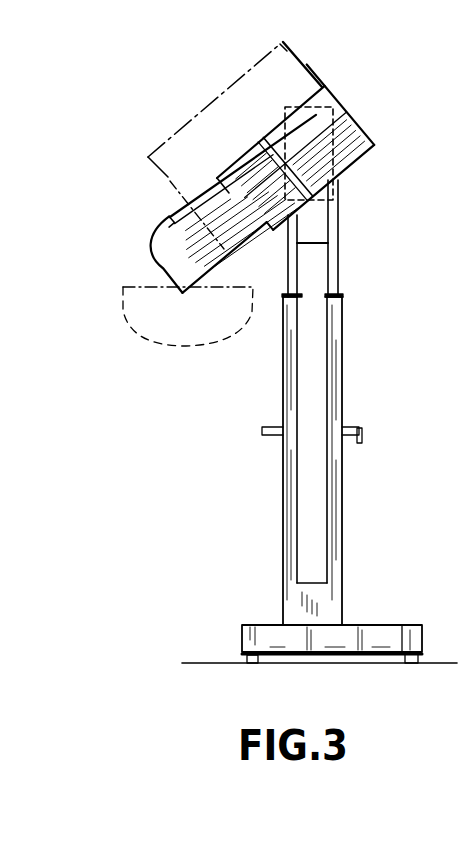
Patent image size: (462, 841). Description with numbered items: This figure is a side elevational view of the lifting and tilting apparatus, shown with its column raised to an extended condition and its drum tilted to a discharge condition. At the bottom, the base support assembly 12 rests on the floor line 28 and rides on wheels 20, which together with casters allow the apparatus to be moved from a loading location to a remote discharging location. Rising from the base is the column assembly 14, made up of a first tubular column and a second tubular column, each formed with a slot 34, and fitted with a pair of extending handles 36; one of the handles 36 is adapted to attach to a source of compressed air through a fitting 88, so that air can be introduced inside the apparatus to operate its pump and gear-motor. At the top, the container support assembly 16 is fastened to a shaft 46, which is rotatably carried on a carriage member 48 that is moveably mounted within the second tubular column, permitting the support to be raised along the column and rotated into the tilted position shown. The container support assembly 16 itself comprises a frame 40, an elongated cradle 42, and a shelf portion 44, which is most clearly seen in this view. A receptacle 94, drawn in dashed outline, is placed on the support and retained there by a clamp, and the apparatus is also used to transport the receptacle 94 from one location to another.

The base support assembly 12 is at (365, 614).
The column assembly 14 is at (344, 361).
The container support assembly 16 is at (271, 194).
The wheels 20 is at (258, 663).
The floor line 28 is at (198, 662).
The slot 34 is at (330, 286).
The extending handles 36 is at (270, 427).
The frame 40 is at (357, 125).
The elongated cradle 42 is at (158, 240).
The shelf portion 44 is at (318, 85).
The shaft 46 is at (330, 208).
The carriage member 48 is at (312, 233).
The fitting 88 is at (360, 443).
The receptacle 94 is at (241, 80).